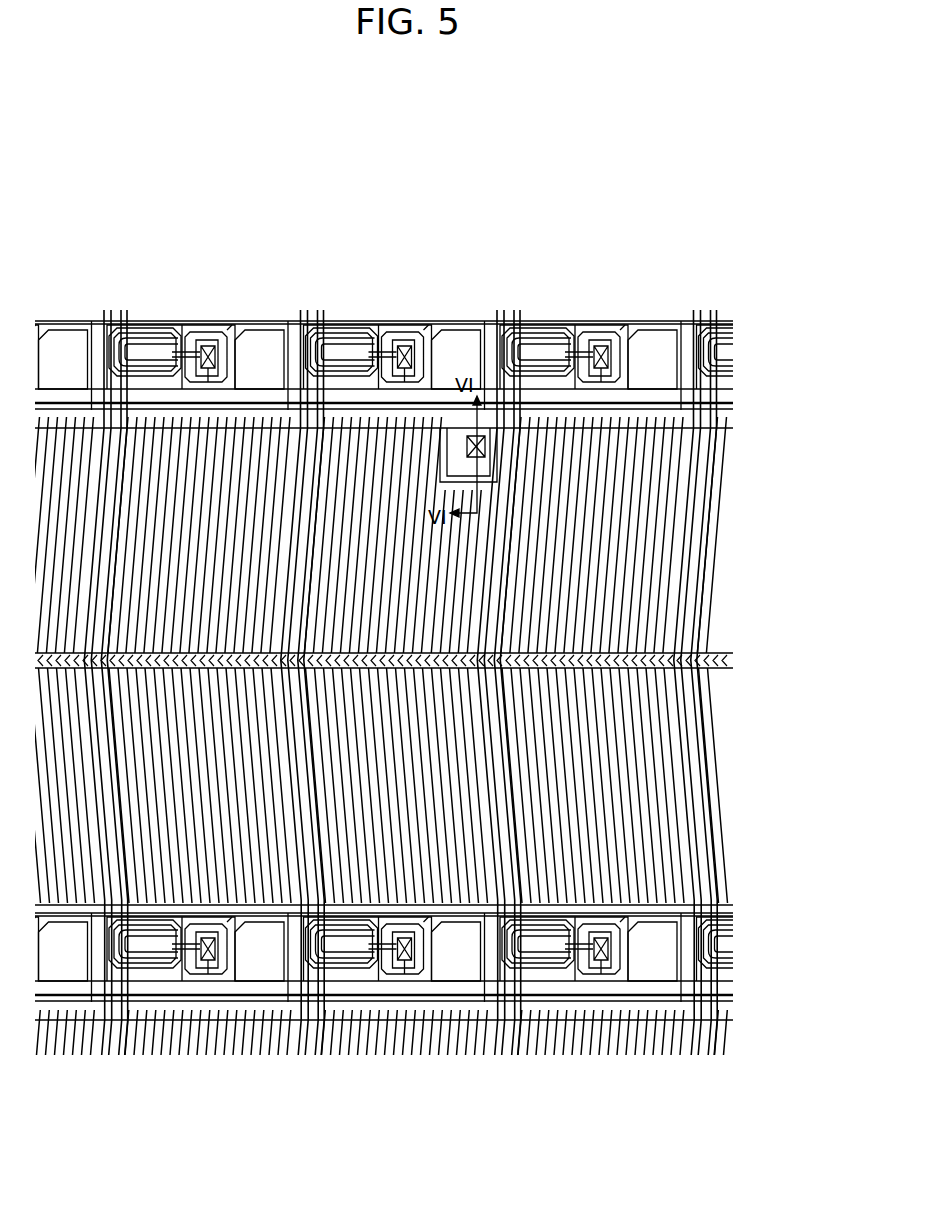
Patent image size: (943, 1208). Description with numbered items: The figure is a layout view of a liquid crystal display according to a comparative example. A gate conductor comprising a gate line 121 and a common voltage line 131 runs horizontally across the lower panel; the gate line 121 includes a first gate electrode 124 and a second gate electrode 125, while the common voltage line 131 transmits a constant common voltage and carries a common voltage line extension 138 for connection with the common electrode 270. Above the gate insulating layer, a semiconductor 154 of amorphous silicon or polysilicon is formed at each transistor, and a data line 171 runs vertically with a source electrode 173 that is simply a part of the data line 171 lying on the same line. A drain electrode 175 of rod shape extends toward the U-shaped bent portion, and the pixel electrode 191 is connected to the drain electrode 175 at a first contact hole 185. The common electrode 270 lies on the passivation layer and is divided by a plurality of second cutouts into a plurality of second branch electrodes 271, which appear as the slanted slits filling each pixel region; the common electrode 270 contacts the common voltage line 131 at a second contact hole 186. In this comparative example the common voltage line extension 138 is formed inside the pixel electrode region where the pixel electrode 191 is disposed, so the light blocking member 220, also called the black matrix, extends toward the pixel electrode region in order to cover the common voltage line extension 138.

The gate line 121 is at (728, 972).
The first gate electrode 124 is at (459, 690).
The second gate electrode 125 is at (660, 328).
The common voltage line 131 is at (688, 633).
The common voltage line extension 138 is at (426, 374).
The semiconductor 154 is at (580, 337).
The data line 171 is at (505, 520).
The source electrode 173 is at (540, 328).
The drain electrode 175 is at (575, 342).
The first contact hole 185 is at (602, 347).
The second contact hole 186 is at (480, 430).
The pixel electrode 191 is at (232, 322).
The light blocking member 220 is at (660, 430).
The common electrode 270 is at (630, 895).
The second branch electrodes 271 is at (650, 750).